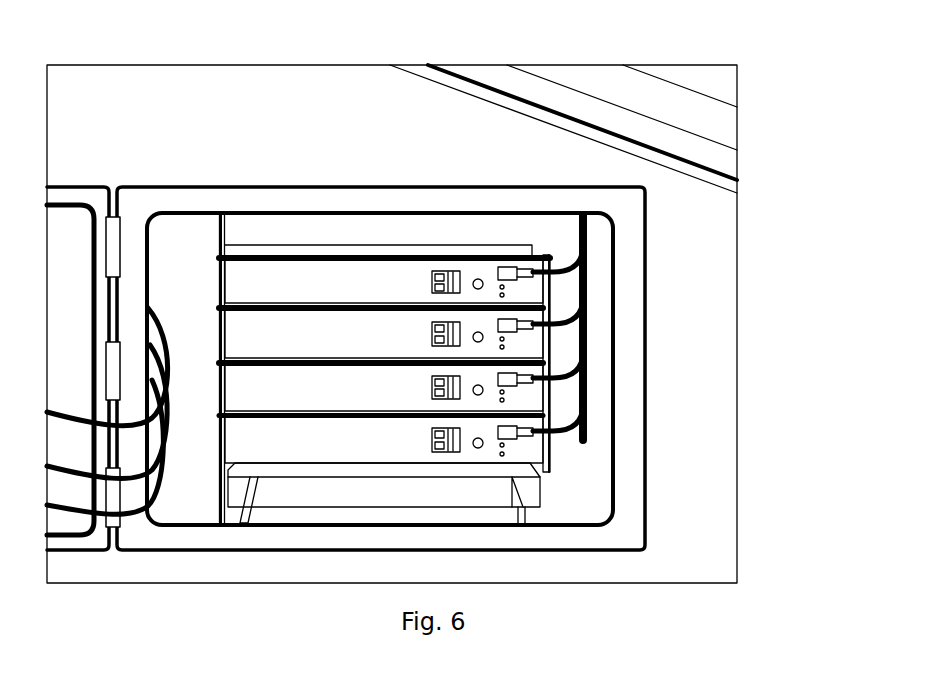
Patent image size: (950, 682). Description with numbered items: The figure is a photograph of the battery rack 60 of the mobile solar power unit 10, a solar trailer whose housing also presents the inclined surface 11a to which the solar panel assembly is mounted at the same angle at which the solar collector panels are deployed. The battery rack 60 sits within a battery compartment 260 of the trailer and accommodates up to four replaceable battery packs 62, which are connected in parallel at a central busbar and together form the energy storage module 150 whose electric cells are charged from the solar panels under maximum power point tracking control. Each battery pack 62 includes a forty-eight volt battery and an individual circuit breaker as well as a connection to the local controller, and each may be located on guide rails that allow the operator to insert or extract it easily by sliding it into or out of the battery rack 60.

The inclined surface 11a is at (528, 103).
The mobile solar power unit 10 is at (692, 415).
The battery rack 60 is at (619, 306).
The energy storage module 150 is at (260, 335).
The battery pack 62 is at (372, 292).
The battery compartment 260 is at (580, 473).